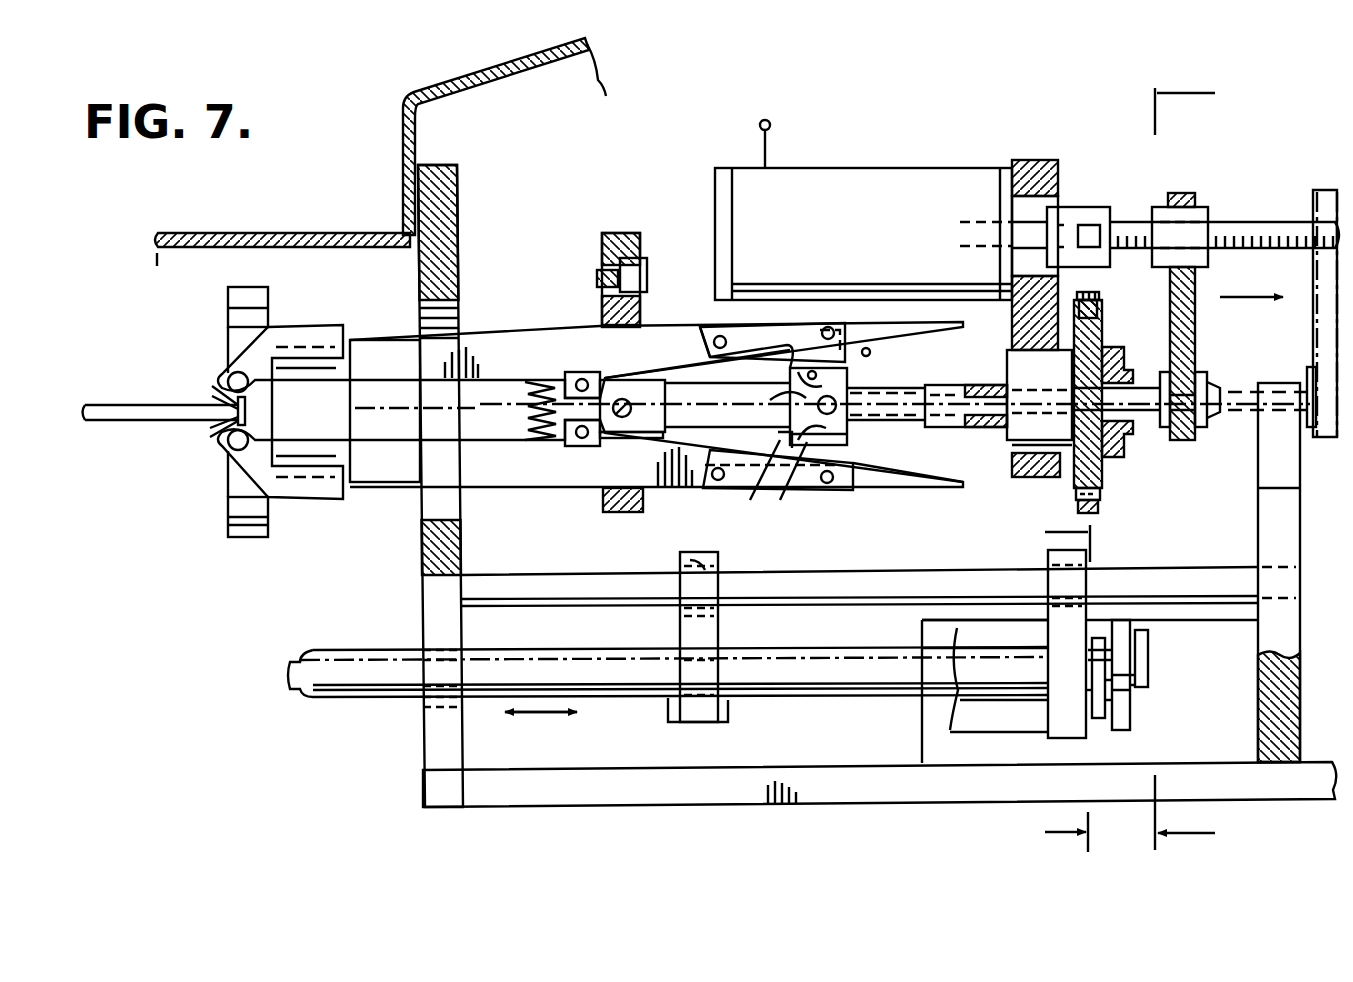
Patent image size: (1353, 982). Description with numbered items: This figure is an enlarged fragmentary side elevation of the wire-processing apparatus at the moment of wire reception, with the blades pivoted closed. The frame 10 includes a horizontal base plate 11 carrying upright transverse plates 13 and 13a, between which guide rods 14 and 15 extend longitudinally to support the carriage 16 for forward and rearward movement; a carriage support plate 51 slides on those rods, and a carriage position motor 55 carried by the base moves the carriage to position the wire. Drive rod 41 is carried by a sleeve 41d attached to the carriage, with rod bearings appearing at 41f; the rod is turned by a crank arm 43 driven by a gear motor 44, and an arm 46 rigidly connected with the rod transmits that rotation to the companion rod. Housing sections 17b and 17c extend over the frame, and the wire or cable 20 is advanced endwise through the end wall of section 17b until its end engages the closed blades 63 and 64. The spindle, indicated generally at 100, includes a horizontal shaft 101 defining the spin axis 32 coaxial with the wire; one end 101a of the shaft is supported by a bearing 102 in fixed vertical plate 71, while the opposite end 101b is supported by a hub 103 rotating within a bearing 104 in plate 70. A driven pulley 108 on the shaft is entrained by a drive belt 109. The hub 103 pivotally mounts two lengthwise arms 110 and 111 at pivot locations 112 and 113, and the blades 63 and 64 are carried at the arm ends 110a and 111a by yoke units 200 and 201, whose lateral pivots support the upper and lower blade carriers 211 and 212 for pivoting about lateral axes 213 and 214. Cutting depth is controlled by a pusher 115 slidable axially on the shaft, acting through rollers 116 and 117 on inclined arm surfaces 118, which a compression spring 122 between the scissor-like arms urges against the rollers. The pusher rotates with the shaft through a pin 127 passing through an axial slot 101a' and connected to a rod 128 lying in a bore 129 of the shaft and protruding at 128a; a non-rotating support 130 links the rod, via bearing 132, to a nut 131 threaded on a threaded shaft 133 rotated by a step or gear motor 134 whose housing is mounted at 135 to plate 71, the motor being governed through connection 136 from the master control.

The frame 10 is at (360, 775).
The horizontal base plate 11 is at (514, 793).
The upright transverse plate 13 is at (428, 550).
The upright transverse plate 13a is at (1258, 548).
The guide rod 14 is at (1206, 465).
The guide rod 15 is at (548, 590).
The carriage 16 is at (698, 726).
The housing section 17b is at (200, 232).
The housing cover 17c is at (462, 76).
The wire or cable 20 is at (100, 400).
The spin axis 32 is at (381, 412).
The drive rod 41 is at (300, 690).
The sleeve 41d is at (345, 700).
The bearings 41f is at (685, 545).
The crank arm 43 is at (1130, 705).
The gear motor 44 is at (955, 732).
The arm 46 is at (1148, 636).
The carriage support plate 51 is at (1068, 745).
The carriage position motor 55 is at (1162, 705).
The blade 63 is at (230, 402).
The blade 64 is at (230, 422).
The fixed vertical plate 70 is at (602, 240).
The fixed vertical plate 71 is at (1035, 162).
The adjusting block 100 is at (830, 458).
The horizontal shaft 101 is at (884, 390).
The shaft end 101a is at (912, 489).
The axial slot 101a' is at (700, 370).
The shaft end 101b is at (678, 397).
The bearing 102 is at (1036, 432).
The hub 103 is at (620, 442).
The bearing 104 is at (602, 306).
The driven pulley 108 is at (1103, 470).
The drive belt 109 is at (1098, 292).
The arm 110 is at (488, 332).
The arm end 110a is at (290, 376).
The arm 111 is at (512, 488).
The arm end 111a is at (288, 446).
The pivot location 112 is at (580, 378).
The pivot location 113 is at (575, 440).
The pusher 115 is at (786, 445).
The roller 116 is at (805, 362).
The roller 117 is at (810, 440).
The arm inclined surface 118 is at (866, 348).
The compression spring 122 is at (525, 412).
The pin 127 is at (800, 400).
The rod 128 is at (960, 420).
The rod protruding portion 128a is at (1182, 385).
The bore 129 is at (960, 395).
The support 130 is at (1195, 300).
The nut 131 is at (1178, 207).
The bearing 132 is at (1188, 432).
The threaded shaft 133 is at (1275, 220).
The step or gear motor 134 is at (852, 172).
The motor housing mount 135 is at (1000, 175).
The connection 136 is at (758, 125).
The yoke unit 200 is at (322, 318).
The yoke unit 201 is at (318, 502).
The upper blade carrier 211 is at (222, 298).
The lower blade carrier 212 is at (222, 517).
The lateral axis 213 is at (226, 374).
The lateral axis 214 is at (226, 448).